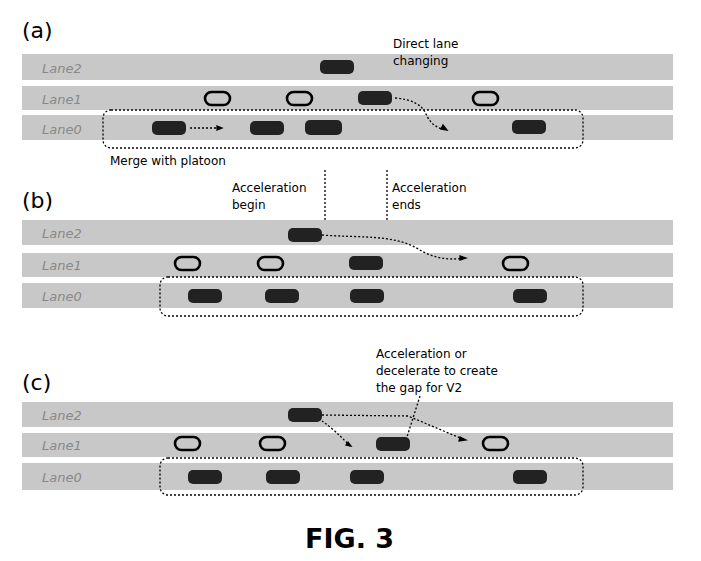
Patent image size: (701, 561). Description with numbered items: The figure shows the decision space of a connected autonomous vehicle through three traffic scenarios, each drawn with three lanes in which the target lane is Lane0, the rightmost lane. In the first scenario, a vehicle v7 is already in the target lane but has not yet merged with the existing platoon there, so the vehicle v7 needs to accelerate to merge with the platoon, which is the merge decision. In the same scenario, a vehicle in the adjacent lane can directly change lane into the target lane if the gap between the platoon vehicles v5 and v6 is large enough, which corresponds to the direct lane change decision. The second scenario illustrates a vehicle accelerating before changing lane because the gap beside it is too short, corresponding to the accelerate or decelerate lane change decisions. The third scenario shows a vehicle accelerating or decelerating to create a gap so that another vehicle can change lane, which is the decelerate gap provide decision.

The vehicle v5 is at (309, 132).
The vehicle v6 is at (522, 132).
The vehicle v7 is at (169, 139).